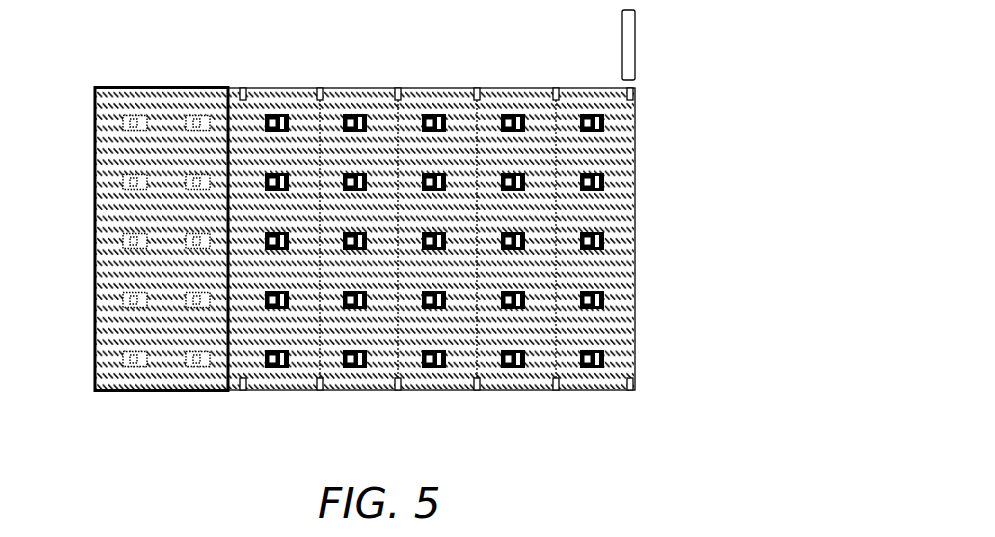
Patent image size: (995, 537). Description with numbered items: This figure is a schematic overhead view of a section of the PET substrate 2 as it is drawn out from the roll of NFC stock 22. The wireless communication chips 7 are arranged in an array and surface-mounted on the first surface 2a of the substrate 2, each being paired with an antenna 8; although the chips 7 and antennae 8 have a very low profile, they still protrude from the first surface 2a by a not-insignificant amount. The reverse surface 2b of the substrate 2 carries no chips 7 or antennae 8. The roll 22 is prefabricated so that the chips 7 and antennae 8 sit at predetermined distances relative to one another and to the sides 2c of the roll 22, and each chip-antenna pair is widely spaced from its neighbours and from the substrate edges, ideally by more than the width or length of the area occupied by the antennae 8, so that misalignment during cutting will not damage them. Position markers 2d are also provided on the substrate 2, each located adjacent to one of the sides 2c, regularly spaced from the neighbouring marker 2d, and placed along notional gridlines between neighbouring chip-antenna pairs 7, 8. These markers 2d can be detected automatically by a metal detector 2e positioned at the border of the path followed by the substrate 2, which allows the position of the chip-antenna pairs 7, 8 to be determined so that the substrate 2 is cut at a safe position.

The PET substrate 2 is at (293, 378).
The first surface 2a is at (277, 375).
The reverse surface 2b is at (163, 378).
The sides of the roll 2c is at (357, 88).
The position markers 2d is at (477, 98).
The metal detector 2e is at (633, 34).
The wireless communication chips 7 is at (356, 372).
The antennae 8 is at (364, 370).
The roll of NFC stock 22 is at (108, 380).